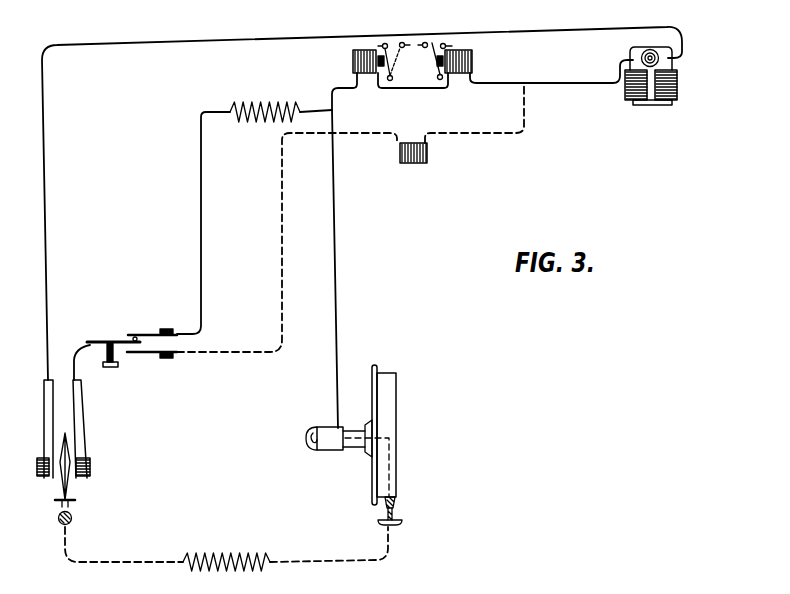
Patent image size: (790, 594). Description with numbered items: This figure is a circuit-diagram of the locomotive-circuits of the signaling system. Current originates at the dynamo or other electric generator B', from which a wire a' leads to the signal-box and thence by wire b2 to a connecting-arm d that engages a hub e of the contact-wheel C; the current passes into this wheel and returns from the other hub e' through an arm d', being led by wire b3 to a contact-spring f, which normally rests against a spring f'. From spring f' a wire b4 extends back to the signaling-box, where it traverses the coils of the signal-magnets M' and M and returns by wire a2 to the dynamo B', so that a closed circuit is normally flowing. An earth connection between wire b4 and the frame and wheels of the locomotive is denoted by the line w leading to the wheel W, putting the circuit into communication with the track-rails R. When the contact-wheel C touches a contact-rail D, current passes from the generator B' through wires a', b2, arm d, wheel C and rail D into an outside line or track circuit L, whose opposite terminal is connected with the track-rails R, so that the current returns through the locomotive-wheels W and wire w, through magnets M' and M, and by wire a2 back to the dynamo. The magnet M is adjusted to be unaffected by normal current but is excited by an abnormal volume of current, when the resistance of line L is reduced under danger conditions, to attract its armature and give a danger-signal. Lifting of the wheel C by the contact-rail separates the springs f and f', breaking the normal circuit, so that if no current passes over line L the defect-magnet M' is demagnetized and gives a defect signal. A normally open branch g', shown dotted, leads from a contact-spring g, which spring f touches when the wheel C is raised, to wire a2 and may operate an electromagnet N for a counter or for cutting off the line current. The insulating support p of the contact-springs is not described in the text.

The wire a' is at (541, 34).
The wire a2 is at (551, 70).
The wire b2 is at (221, 197).
The wire b3 is at (76, 372).
The wire b4 is at (250, 218).
The dynamo B' is at (669, 76).
The defect-magnet M' is at (384, 77).
The magnet M is at (456, 61).
The electromagnet N is at (462, 128).
The circuit branch g' is at (287, 242).
The contact-spring g is at (152, 368).
The line w is at (346, 269).
The contact-spring f is at (113, 330).
The spring f' is at (152, 322).
The insulating post p is at (118, 366).
The connecting-arm d is at (34, 429).
The arm d' is at (96, 429).
The hub e is at (31, 466).
The hub e' is at (94, 463).
The contact-wheel C is at (69, 482).
The contact-rail D is at (58, 507).
The line L is at (226, 549).
The wheel W is at (364, 435).
The track-rails R is at (399, 511).